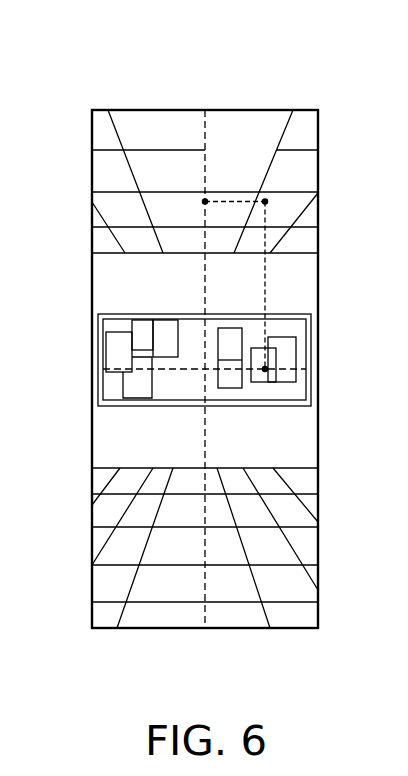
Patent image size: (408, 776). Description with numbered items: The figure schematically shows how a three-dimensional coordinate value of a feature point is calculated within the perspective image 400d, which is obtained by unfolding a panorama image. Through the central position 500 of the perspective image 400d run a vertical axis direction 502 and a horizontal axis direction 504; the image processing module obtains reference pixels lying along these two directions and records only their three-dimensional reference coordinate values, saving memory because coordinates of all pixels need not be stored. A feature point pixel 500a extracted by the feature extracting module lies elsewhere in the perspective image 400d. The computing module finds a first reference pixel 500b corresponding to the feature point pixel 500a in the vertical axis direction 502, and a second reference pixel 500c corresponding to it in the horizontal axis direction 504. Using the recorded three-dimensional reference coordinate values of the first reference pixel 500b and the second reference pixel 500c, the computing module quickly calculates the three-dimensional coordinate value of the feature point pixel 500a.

The perspective image 400d is at (318, 135).
The vertical axis direction 502 is at (205, 108).
The horizontal axis direction 504 is at (330, 374).
The central position 500 is at (204, 367).
The feature point pixel 500a is at (277, 266).
The first reference pixel 500b is at (208, 183).
The second reference pixel 500c is at (270, 386).